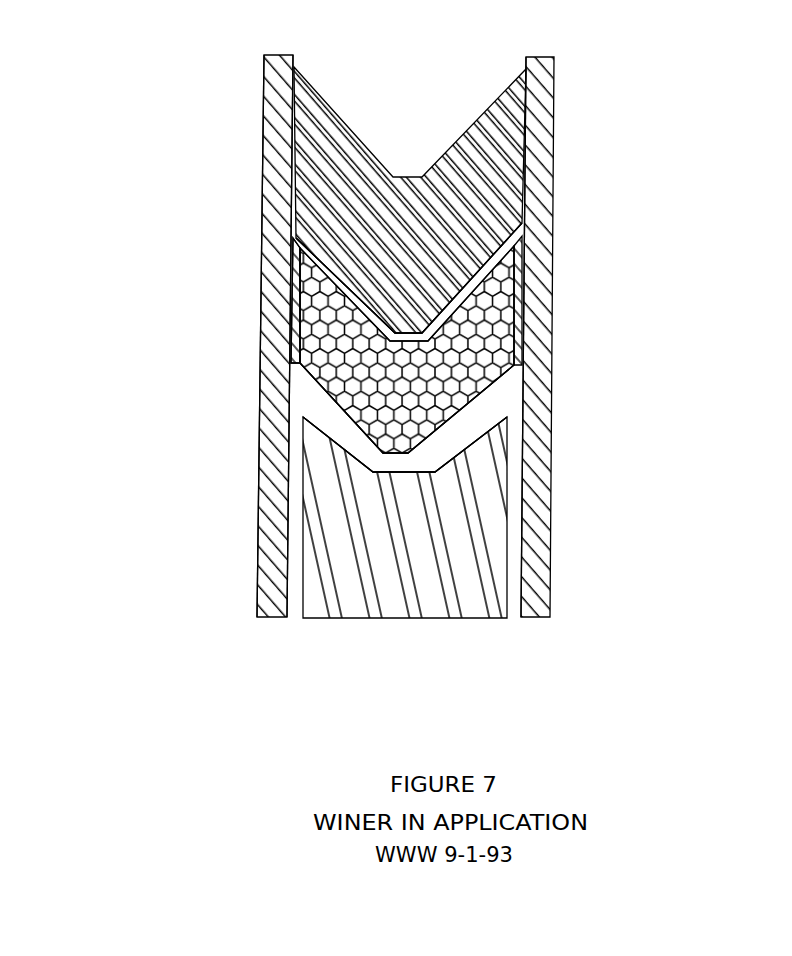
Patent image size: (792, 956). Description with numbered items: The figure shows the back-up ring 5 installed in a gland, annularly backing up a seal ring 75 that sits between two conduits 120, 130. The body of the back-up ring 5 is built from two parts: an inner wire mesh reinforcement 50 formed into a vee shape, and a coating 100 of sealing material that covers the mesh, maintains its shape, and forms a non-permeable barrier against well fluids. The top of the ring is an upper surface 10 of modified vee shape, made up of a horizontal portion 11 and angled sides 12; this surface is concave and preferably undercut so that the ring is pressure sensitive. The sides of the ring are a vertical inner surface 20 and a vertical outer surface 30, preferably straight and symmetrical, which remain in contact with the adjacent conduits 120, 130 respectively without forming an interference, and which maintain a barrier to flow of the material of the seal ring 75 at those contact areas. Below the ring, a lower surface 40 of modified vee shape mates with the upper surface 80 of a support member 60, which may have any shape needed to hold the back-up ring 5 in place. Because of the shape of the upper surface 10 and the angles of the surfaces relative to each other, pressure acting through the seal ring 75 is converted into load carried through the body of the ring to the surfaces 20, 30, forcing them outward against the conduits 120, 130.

The back-up ring 5 is at (294, 354).
The upper surface 10 is at (508, 294).
The horizontal portion 11 is at (296, 318).
The angled sides 12 is at (182, 320).
The vertical inner surface 20 is at (623, 337).
The vertical outer surface 30 is at (182, 336).
The lower surface 40 is at (512, 449).
The wire mesh reinforcement 50 is at (289, 380).
The support member 60 is at (513, 521).
The seal ring 75 is at (510, 200).
The upper surface of the support member 80 is at (287, 491).
The coating 100 is at (182, 235).
The conduit 120 is at (627, 337).
The conduit 130 is at (164, 336).